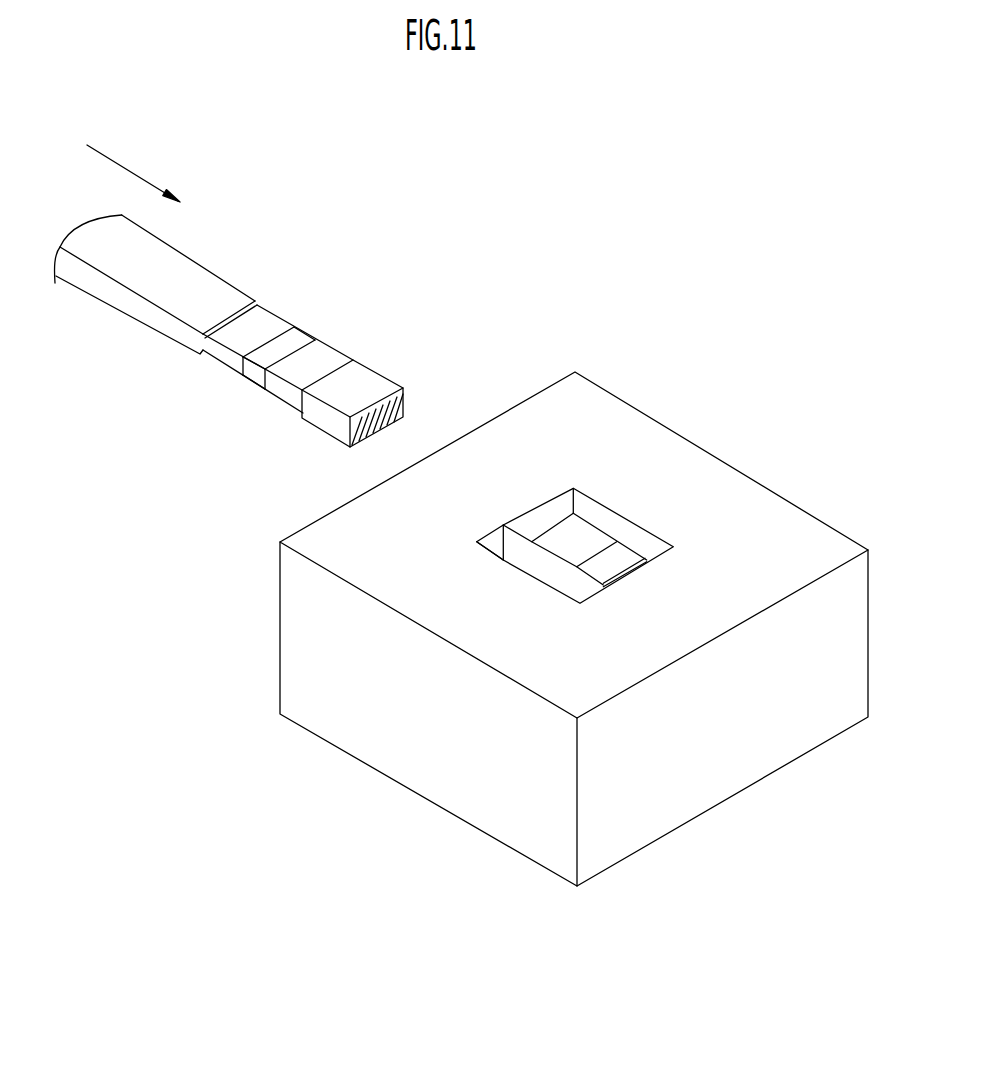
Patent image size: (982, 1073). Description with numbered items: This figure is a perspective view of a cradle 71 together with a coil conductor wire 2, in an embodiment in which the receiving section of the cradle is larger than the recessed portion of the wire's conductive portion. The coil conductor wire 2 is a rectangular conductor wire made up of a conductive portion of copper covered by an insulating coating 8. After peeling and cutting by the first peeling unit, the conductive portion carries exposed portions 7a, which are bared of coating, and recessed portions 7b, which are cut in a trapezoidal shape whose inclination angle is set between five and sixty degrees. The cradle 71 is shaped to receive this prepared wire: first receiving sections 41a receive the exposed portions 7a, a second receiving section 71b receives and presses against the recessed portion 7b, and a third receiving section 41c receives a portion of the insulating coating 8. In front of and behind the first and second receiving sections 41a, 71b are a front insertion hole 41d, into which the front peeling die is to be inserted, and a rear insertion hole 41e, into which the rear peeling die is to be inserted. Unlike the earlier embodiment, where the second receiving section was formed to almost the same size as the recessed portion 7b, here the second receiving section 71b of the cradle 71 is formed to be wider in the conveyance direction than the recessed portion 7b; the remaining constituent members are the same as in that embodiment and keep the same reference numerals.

The coil conductor wire 2 is at (399, 375).
The exposed portion 7a is at (267, 327).
The recessed portion 7b is at (298, 347).
The insulating coating 8 is at (222, 293).
The first receiving section 41a is at (588, 531).
The third receiving section 41c is at (460, 467).
The front insertion hole 41d is at (490, 540).
The rear insertion hole 41e is at (572, 512).
The cradle 71 is at (415, 768).
The second receiving section 71b is at (623, 551).